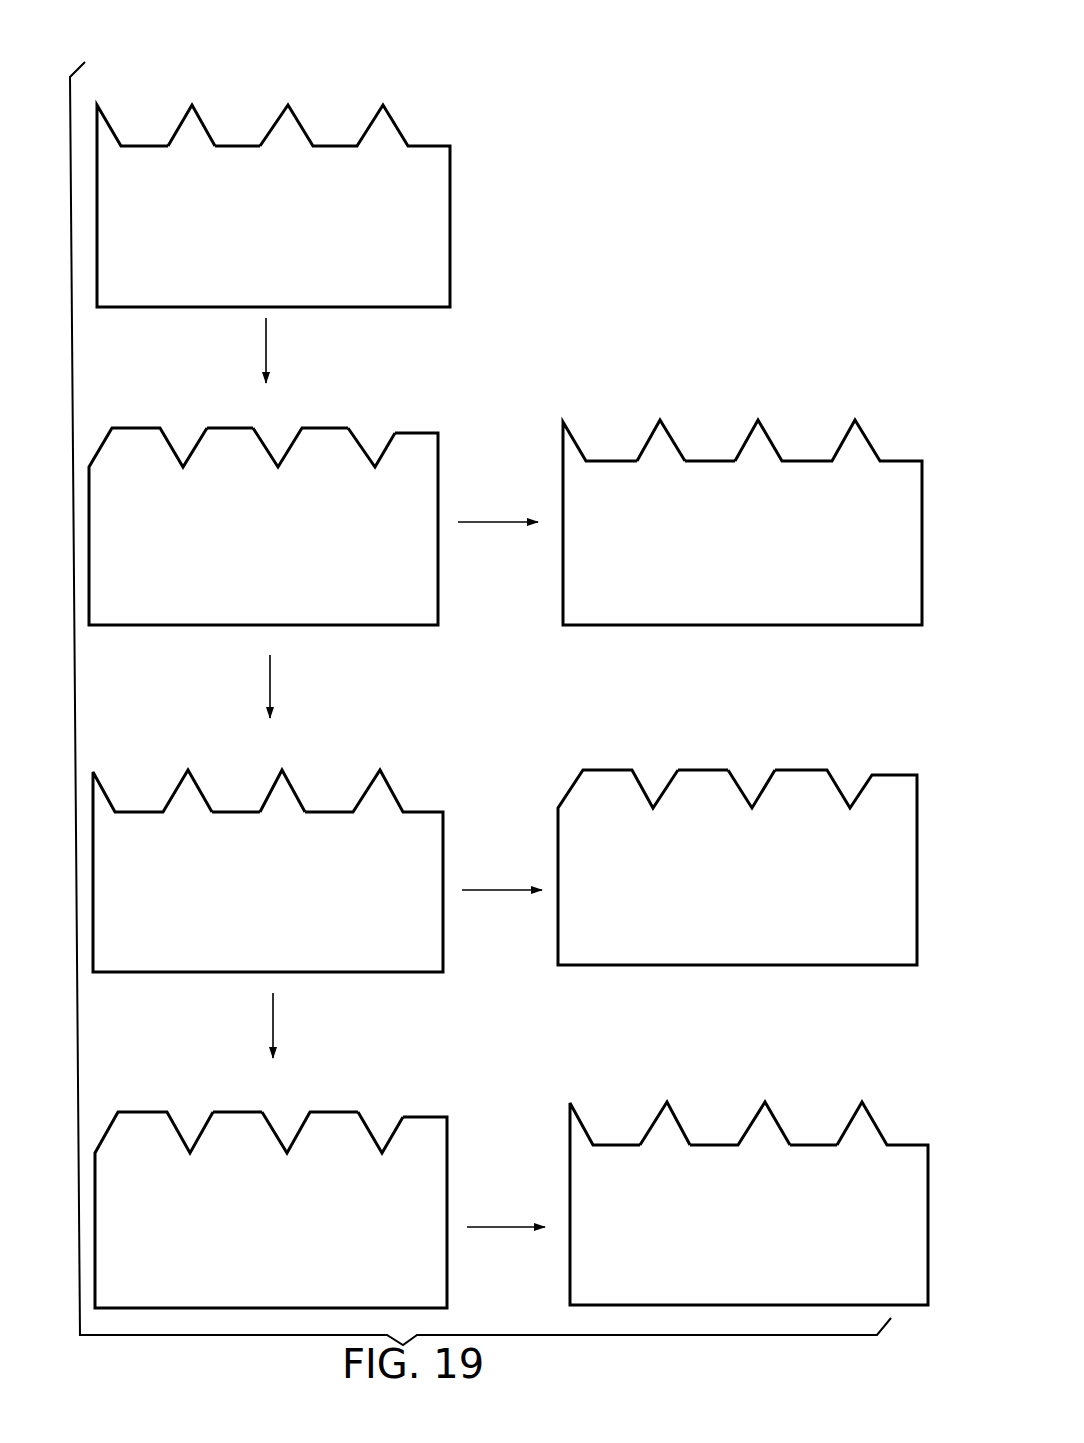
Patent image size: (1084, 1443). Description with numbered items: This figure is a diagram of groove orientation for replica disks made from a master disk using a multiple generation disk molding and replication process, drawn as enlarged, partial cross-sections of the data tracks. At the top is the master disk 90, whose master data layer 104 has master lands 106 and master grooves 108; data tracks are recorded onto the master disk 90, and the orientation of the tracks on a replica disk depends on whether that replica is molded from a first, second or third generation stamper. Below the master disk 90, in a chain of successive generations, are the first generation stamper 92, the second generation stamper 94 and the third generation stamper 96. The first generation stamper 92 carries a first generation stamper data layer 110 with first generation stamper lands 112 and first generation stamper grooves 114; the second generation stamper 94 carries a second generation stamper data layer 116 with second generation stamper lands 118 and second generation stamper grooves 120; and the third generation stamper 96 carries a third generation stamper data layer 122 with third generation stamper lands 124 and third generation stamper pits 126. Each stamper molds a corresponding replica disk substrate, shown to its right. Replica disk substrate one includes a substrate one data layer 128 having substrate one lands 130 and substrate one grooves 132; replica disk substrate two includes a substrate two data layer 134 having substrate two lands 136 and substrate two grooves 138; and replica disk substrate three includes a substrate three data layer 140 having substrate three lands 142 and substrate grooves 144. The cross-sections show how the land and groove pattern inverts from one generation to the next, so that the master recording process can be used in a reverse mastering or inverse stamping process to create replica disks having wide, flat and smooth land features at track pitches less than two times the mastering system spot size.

The master disk 90 is at (130, 102).
The first generation stamper 92 is at (173, 407).
The second generation stamper 94 is at (160, 762).
The third generation stamper 96 is at (167, 1093).
The master data layer 104 is at (330, 100).
The master lands 106 is at (182, 127).
The master grooves 108 is at (240, 146).
The first generation stamper data layer 110 is at (453, 398).
The first generation stamper lands 112 is at (230, 428).
The first generation stamper grooves 114 is at (360, 437).
The second generation stamper data layer 116 is at (427, 797).
The second generation stamper lands 118 is at (292, 787).
The second generation stamper grooves 120 is at (235, 812).
The third generation stamper data layer 122 is at (440, 1100).
The third generation stamper lands 124 is at (238, 1112).
The third generation stamper pits 126 is at (370, 1125).
The substrate 1 data layer 128 is at (603, 403).
The substrate 1 lands 130 is at (648, 440).
The substrate 1 grooves 132 is at (708, 460).
The substrate 2 data layer 134 is at (648, 762).
The substrate 2 lands 136 is at (700, 770).
The substrate 2 grooves 138 is at (738, 780).
The substrate 3 data layer 140 is at (630, 1093).
The substrate 3 lands 142 is at (673, 1113).
The substrate grooves 144 is at (815, 1145).